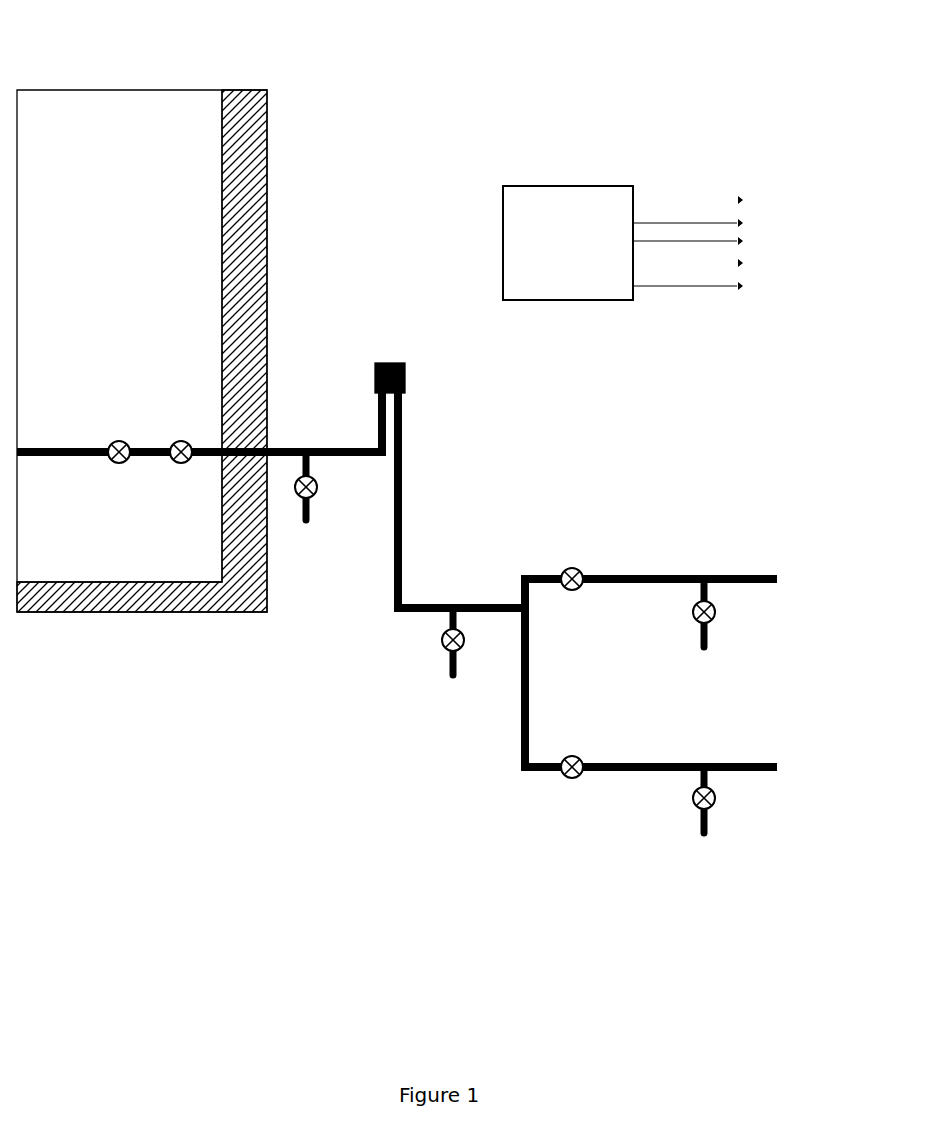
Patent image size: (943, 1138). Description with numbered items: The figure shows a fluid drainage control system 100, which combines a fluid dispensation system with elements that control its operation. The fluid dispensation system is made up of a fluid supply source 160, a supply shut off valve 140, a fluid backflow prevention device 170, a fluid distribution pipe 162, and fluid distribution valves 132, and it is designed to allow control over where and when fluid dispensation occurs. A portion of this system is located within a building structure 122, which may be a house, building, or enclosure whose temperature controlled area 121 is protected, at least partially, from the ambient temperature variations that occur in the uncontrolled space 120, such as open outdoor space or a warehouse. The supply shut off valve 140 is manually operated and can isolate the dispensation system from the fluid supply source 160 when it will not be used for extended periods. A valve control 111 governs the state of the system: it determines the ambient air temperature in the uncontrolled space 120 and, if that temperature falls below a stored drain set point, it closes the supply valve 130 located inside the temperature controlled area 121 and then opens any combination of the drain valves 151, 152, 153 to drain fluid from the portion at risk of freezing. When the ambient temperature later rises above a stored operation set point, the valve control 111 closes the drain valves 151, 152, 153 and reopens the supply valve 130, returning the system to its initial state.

The fluid drainage control system 100 is at (726, 48).
The valve control 111 is at (520, 185).
The uncontrolled space 120 is at (392, 238).
The temperature controlled area 121 is at (157, 89).
The building structure 122 is at (250, 88).
The supply valve 130 is at (121, 440).
The fluid distribution valves 132 is at (576, 590).
The supply shut off valve 140 is at (183, 465).
The drain valve 151 is at (320, 485).
The drain valve 152 is at (441, 643).
The drain valve 153 is at (716, 610).
The fluid supply source 160 is at (47, 456).
The fluid distribution pipe 162 is at (756, 578).
The fluid backflow prevention device 170 is at (400, 363).